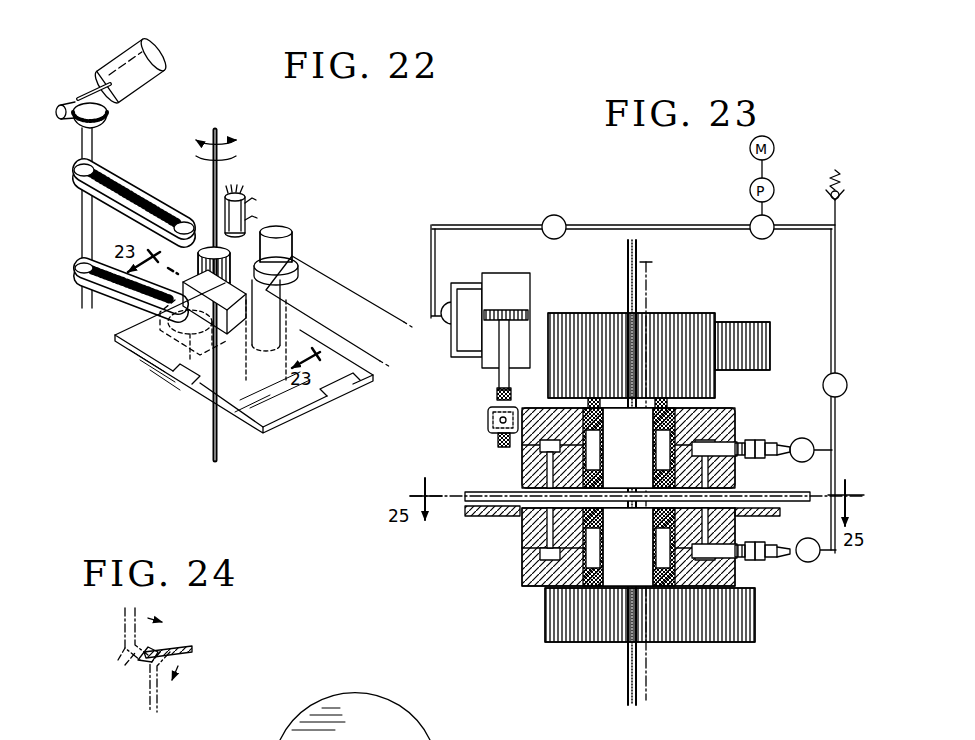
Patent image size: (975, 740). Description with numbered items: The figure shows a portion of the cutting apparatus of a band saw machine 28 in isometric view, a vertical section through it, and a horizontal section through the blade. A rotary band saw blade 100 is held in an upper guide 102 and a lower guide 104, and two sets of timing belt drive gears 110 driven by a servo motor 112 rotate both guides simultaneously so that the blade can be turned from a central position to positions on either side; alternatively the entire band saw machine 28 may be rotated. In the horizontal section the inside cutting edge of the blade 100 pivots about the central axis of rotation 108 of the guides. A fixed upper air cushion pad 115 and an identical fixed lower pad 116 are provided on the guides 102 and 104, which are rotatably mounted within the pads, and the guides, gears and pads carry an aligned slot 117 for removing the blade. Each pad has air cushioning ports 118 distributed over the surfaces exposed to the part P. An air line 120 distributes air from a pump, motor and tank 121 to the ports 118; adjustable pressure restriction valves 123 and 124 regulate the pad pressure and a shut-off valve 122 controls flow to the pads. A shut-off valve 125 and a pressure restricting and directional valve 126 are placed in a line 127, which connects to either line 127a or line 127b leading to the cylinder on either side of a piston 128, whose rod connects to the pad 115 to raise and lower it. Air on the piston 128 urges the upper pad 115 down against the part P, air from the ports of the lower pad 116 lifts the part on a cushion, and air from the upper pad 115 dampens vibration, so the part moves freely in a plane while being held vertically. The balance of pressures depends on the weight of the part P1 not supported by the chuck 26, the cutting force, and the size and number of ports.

In FIG. 22, the servo motor 112 is at (166, 60).
In FIG. 22, the band saw machine 28 is at (78, 236).
In FIG. 22, the timing belt drive gears 110 is at (150, 180).
In FIG. 22, the rotary band saw blade 100 is at (218, 130).
In FIG. 23, the rotary band saw blade 100 is at (626, 698).
In FIG. 24, the rotary band saw blade 100 is at (178, 644).
In FIG. 22, the adjustable pressure restriction valve 124 is at (246, 195).
In FIG. 23, the adjustable pressure restriction valve 124 is at (812, 562).
In FIG. 22, the upper guide 102 is at (240, 240).
In FIG. 23, the upper guide 102 is at (664, 313).
In FIG. 22, the aligned slot 117 is at (185, 298).
In FIG. 22, the chuck 26 is at (290, 240).
In FIG. 22, the part P1 is at (160, 372).
In FIG. 23, the line 127 is at (431, 262).
In FIG. 23, the line 127a is at (466, 284).
In FIG. 23, the line 127b is at (464, 356).
In FIG. 23, the shut-off valve 125 is at (562, 226).
In FIG. 23, the pump, motor and tank 121 is at (752, 222).
In FIG. 23, the air line 120 is at (834, 336).
In FIG. 23, the shut-off valve 122 is at (830, 378).
In FIG. 23, the adjustable pressure restriction valve 123 is at (810, 436).
In FIG. 23, the pressure restricting and directional valve 126 is at (448, 322).
In FIG. 23, the piston 128 is at (520, 300).
In FIG. 23, the upper air cushion pad 115 is at (520, 458).
In FIG. 23, the lower air cushion pad 116 is at (520, 570).
In FIG. 23, the air cushioning ports 118 is at (522, 478).
In FIG. 23, the part P is at (790, 475).
In FIG. 23, the lower guide 104 is at (690, 644).
In FIG. 24, the central axis of rotation 108 is at (142, 662).